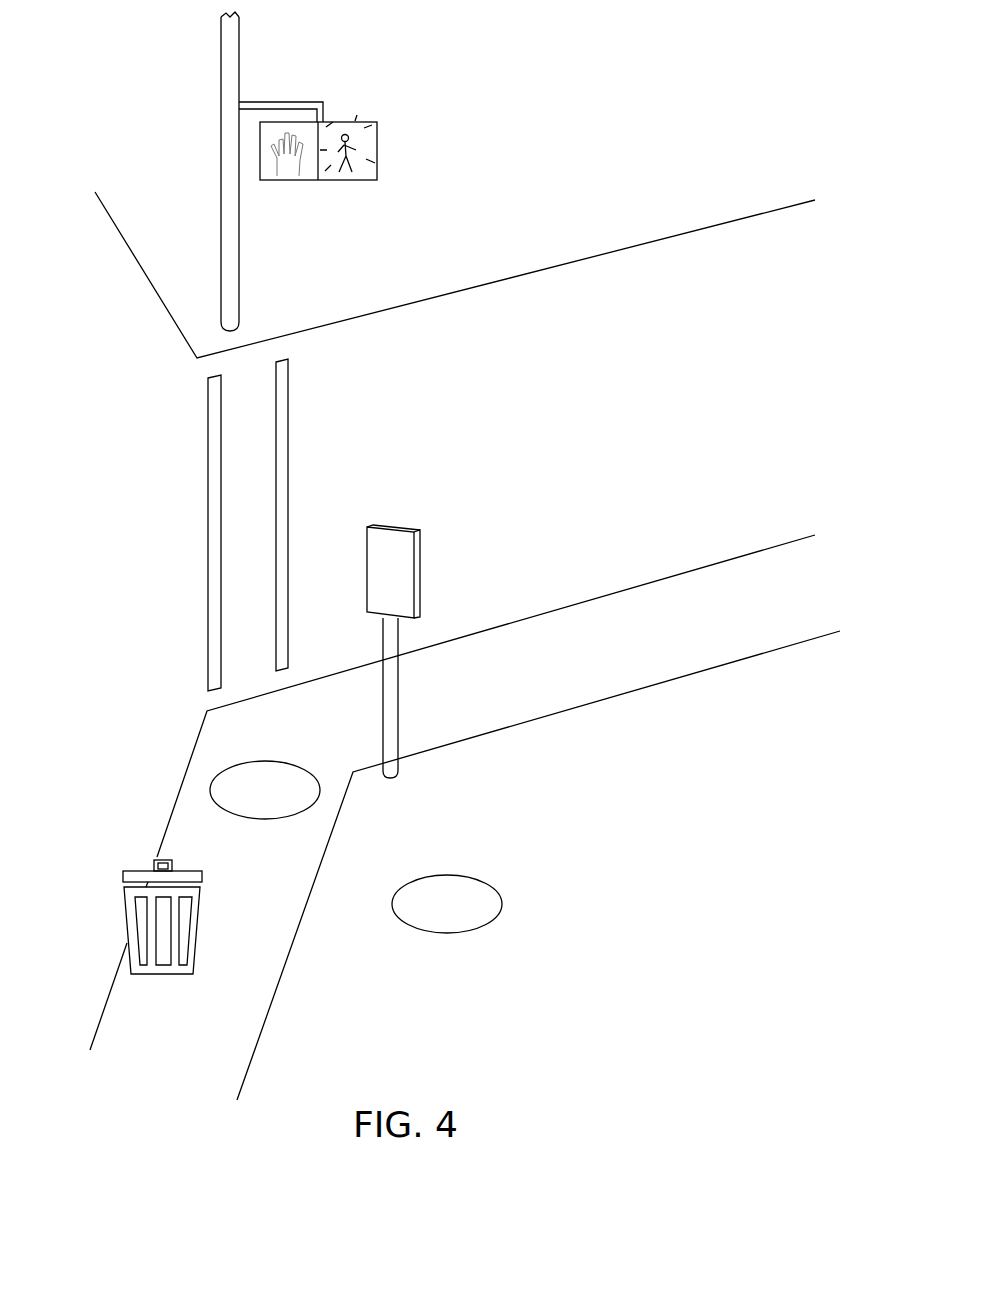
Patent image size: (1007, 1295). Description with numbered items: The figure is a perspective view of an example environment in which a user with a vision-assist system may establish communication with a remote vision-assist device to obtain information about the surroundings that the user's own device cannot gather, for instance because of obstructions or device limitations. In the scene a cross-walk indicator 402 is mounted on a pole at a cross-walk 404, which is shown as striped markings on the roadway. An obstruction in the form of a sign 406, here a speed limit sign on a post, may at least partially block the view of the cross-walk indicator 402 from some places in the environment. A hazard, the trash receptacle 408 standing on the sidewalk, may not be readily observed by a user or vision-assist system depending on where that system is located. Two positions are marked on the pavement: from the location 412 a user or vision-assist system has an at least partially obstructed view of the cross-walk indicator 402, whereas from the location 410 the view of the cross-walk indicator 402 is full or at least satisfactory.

The cross-walk indicator 402 is at (378, 147).
The cross-walk 404 is at (290, 437).
The sign 406 is at (421, 548).
The trash receptacle 408 is at (160, 975).
The location 410 is at (278, 820).
The location 412 is at (503, 903).